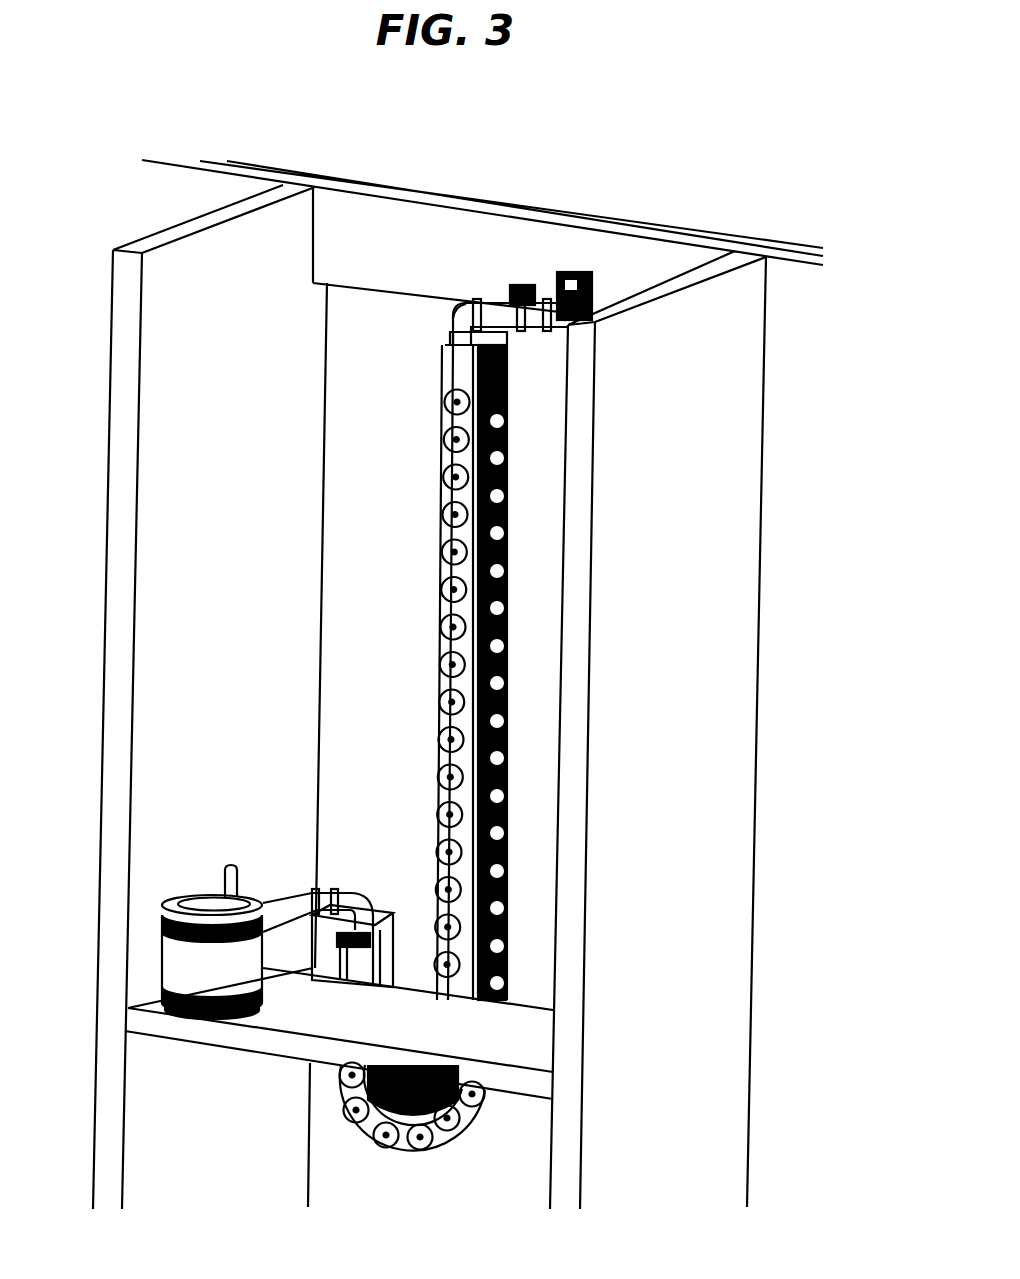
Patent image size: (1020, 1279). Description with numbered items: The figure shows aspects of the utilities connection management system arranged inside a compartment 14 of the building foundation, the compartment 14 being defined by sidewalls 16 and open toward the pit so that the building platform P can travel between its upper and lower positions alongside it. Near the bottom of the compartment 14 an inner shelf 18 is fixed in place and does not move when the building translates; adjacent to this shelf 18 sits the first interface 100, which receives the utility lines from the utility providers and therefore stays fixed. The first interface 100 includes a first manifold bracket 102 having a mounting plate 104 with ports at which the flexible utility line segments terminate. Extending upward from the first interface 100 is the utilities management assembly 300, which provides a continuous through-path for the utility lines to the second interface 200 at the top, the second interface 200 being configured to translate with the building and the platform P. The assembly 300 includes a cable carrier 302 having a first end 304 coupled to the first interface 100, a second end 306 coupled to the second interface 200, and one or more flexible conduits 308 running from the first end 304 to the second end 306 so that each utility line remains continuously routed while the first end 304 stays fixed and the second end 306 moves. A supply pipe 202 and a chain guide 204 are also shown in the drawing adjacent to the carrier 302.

The compartment 14 is at (349, 343).
The sidewalls 16 is at (110, 330).
The inner shelf 18 is at (362, 1017).
The first interface 100 is at (281, 871).
The first manifold bracket 102 is at (366, 876).
The mounting plate 104 is at (408, 905).
The second interface 200 is at (477, 263).
The supply pipe 202 is at (423, 337).
The chain guide 204 is at (441, 370).
The utilities management assembly 300 is at (602, 154).
The cable carrier 302 is at (422, 573).
The first end 304 is at (404, 950).
The second end 306 is at (440, 316).
The flexible conduits 308 is at (516, 370).
The building platform P is at (682, 201).